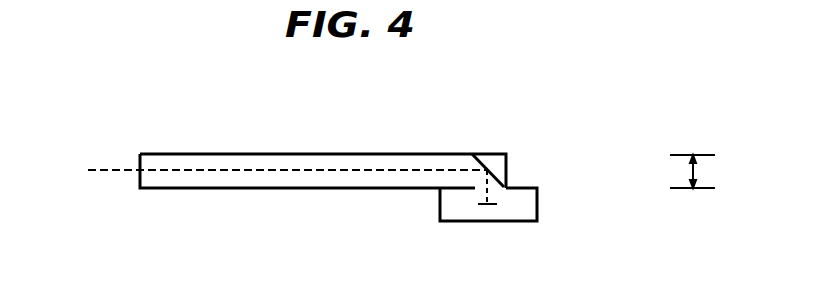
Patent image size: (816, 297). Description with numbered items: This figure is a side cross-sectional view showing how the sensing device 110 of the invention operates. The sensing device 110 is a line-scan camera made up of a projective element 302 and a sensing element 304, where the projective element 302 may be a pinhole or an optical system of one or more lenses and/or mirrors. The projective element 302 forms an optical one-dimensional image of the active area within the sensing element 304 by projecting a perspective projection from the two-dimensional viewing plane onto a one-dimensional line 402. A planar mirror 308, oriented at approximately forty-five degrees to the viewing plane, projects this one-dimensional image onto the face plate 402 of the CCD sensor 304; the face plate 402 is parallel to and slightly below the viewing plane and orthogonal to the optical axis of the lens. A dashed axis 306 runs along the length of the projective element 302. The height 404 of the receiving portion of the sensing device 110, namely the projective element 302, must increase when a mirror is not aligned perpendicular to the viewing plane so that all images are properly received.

The sensing device 110 is at (172, 72).
The projective element 302 is at (321, 154).
The sensing element 304 is at (538, 200).
The center axis 306 is at (112, 173).
The planar mirror 308 is at (484, 155).
The face plate 402 is at (480, 204).
The height 404 is at (697, 172).